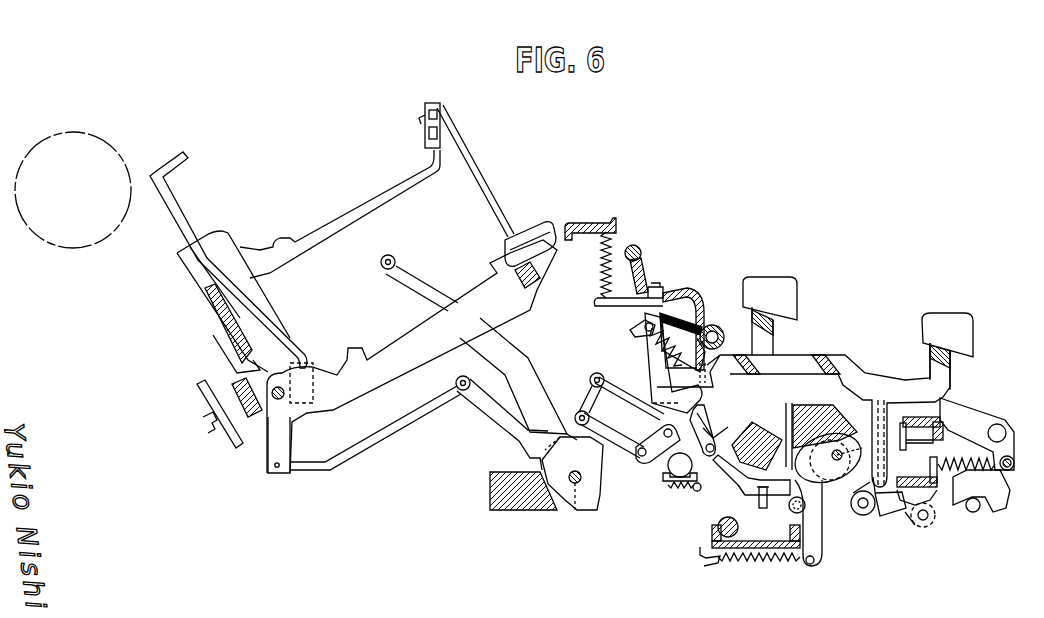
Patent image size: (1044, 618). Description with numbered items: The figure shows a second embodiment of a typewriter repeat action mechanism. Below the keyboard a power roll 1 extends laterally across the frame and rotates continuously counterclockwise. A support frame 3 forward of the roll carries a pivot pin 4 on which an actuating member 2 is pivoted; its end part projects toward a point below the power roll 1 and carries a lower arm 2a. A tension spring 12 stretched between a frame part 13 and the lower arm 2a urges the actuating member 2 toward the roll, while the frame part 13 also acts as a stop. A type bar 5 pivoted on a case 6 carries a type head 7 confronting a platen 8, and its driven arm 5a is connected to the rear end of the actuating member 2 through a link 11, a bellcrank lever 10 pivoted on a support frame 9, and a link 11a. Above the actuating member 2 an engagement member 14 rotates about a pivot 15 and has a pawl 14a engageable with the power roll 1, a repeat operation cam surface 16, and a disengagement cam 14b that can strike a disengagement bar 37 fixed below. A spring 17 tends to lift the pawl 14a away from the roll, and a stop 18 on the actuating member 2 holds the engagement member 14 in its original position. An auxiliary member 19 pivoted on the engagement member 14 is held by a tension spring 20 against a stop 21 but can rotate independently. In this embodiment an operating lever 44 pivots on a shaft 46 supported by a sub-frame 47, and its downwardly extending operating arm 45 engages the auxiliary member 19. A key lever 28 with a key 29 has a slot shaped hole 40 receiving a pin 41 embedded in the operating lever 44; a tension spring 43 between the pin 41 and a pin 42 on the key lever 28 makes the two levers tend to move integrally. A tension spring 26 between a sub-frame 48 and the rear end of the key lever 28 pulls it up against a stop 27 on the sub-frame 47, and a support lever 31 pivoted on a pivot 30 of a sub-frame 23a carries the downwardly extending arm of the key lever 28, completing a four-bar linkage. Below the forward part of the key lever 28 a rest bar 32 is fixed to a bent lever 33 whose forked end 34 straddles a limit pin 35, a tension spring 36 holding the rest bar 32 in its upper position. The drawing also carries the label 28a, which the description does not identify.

The power roll 1 is at (783, 428).
The actuating member 2 is at (823, 483).
The lower arm 2a is at (820, 553).
The support frame 3 is at (822, 403).
The pivot pin 4 is at (840, 437).
The type bar 5 is at (416, 338).
The driven arm 5a is at (267, 460).
The case 6 is at (283, 335).
The type head 7 is at (528, 233).
The platen 8 is at (78, 248).
The support frame 9 is at (488, 500).
The bellcrank lever 10 is at (502, 340).
The link 11 is at (330, 294).
The link 11a is at (617, 426).
The tension spring 12 is at (763, 563).
The frame part 13 is at (717, 536).
The engagement member 14 is at (720, 478).
The pawl 14a is at (733, 425).
The disengagement cam 14b is at (743, 505).
The pivot 15 is at (667, 477).
The repeat operation cam surface 16 is at (723, 422).
The spring 17 is at (787, 513).
The stop 18 is at (755, 510).
The auxiliary member 19 is at (697, 440).
The tension spring 20 is at (677, 493).
The stop 21 is at (668, 463).
The sub-frame 23a is at (938, 505).
The tension spring 26 is at (598, 257).
The stop 27 is at (640, 293).
The key lever 28 is at (848, 365).
The frame arm 28a is at (875, 507).
The key 29 is at (800, 304).
The pivot 30 is at (923, 527).
The support lever 31 is at (902, 533).
The rest bar 32 is at (953, 405).
The bent lever 33 is at (1013, 418).
The forked end 34 is at (987, 510).
The limit pin 35 is at (973, 514).
The tension spring 36 is at (980, 457).
The disengagement bar 37 is at (730, 557).
The slot shaped hole 40 is at (663, 320).
The pin 41 is at (637, 328).
The pin 42 is at (692, 394).
The tension spring 43 is at (647, 348).
The operating lever 44 is at (653, 384).
The operating arm 45 is at (655, 424).
The shaft 46 is at (716, 326).
The sub-frame 47 is at (703, 300).
The sub-frame 48 is at (585, 222).